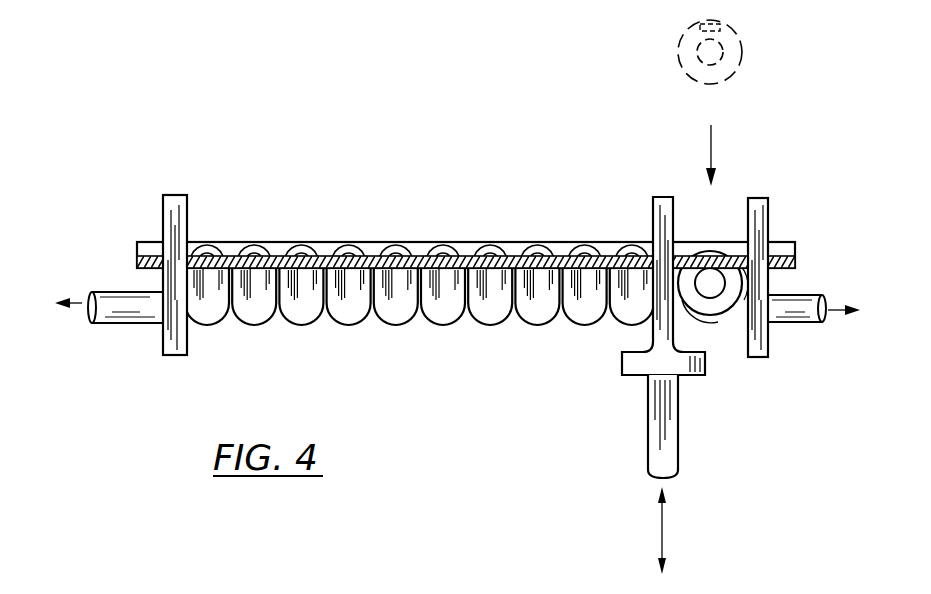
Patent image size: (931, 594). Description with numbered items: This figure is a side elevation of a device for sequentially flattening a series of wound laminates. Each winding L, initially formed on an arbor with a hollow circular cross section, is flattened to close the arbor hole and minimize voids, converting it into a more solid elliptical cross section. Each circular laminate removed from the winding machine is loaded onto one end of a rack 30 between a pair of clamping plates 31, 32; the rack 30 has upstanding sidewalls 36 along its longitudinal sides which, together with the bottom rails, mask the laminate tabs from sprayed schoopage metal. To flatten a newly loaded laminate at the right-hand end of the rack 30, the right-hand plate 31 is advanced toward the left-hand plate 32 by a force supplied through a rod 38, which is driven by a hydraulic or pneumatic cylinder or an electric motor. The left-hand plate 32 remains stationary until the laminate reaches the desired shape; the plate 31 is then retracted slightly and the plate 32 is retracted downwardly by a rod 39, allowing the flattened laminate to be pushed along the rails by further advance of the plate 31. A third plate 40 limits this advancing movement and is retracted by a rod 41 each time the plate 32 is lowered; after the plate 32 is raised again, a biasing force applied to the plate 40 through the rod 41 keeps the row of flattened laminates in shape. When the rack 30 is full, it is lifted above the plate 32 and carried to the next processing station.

The rack 30 is at (458, 297).
The right-hand clamping plate 31 is at (770, 204).
The left-hand clamping plate 32 is at (652, 212).
The upstanding sidewall 36 is at (790, 243).
The rod 38 is at (795, 327).
The rod 39 is at (648, 433).
The third plate 40 is at (187, 210).
The rod 41 is at (121, 292).
The winding L is at (537, 326).